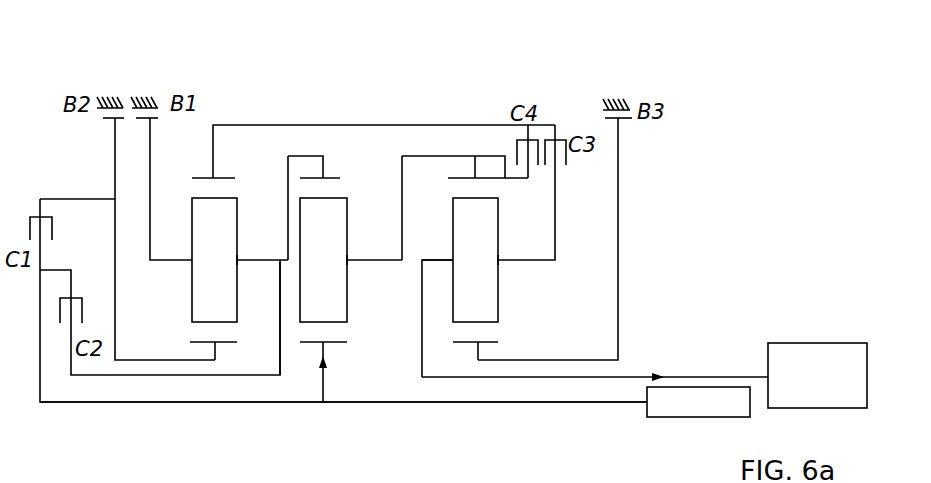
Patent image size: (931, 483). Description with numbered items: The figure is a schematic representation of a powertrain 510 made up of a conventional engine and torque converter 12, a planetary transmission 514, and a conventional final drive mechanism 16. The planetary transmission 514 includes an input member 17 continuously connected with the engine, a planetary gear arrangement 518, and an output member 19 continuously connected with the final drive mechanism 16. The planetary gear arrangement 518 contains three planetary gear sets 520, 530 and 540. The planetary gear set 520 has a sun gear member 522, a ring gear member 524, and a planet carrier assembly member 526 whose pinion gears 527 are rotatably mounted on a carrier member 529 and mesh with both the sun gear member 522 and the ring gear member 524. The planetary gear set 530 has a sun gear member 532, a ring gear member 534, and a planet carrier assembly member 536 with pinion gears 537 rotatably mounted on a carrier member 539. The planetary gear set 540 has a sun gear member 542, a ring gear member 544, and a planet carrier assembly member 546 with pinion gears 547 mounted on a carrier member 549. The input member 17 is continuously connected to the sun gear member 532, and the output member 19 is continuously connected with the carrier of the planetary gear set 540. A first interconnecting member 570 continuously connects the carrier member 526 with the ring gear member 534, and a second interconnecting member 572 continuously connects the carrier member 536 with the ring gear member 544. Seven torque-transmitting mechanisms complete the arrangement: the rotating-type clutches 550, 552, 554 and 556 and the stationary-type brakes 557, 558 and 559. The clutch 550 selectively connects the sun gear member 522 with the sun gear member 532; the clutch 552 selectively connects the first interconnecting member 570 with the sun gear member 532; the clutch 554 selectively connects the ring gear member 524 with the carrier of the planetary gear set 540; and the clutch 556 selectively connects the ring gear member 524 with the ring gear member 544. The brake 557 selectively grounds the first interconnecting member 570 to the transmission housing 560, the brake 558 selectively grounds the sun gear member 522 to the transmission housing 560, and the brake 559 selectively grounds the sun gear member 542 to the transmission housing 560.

The engine and torque converter 12 is at (712, 417).
The final drive mechanism 16 is at (825, 343).
The input member 17 is at (558, 402).
The output member 19 is at (630, 375).
The powertrain 510 is at (475, 60).
The planetary transmission 514 is at (528, 65).
The planetary gear arrangement 518 is at (230, 70).
The planetary gear set 520 is at (205, 347).
The sun gear member 522 is at (222, 343).
The ring gear member 524 is at (200, 179).
The planet carrier assembly member 526 is at (242, 257).
The pinion gears 527 is at (214, 260).
The carrier member 529 is at (256, 262).
The planetary gear set 530 is at (318, 347).
The sun gear member 532 is at (335, 343).
The ring gear member 534 is at (328, 178).
The planet carrier assembly member 536 is at (350, 253).
The pinion gears 537 is at (323, 260).
The carrier member 539 is at (380, 259).
The planetary gear set 540 is at (472, 347).
The sun gear member 542 is at (482, 343).
The ring gear member 544 is at (465, 179).
The planet carrier assembly member 546 is at (503, 265).
The pinion gears 547 is at (475, 260).
The carrier member 549 is at (440, 260).
The clutch 550 is at (45, 243).
The clutch 552 is at (67, 328).
The clutch 554 is at (562, 168).
The clutch 556 is at (533, 168).
The brake 557 is at (163, 117).
The brake 558 is at (100, 117).
The brake 559 is at (633, 118).
The transmission housing 560 is at (163, 96).
The first interconnecting member 570 is at (315, 155).
The second interconnecting member 572 is at (463, 155).